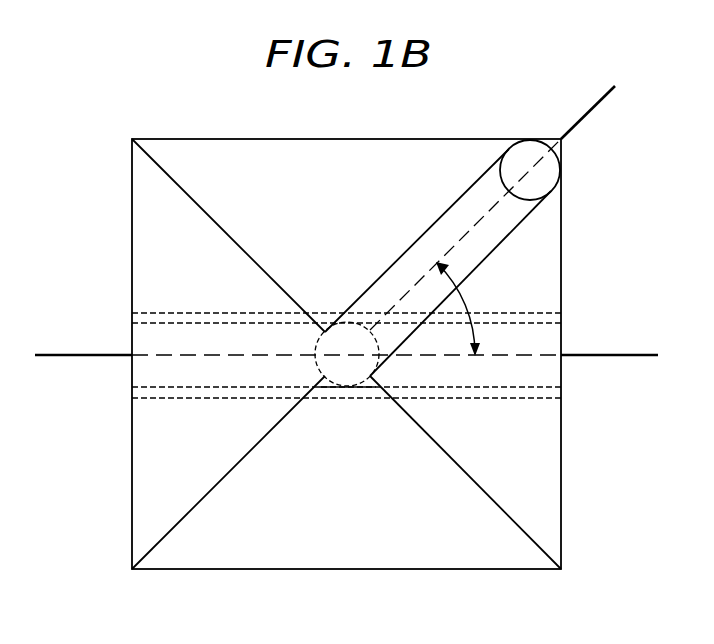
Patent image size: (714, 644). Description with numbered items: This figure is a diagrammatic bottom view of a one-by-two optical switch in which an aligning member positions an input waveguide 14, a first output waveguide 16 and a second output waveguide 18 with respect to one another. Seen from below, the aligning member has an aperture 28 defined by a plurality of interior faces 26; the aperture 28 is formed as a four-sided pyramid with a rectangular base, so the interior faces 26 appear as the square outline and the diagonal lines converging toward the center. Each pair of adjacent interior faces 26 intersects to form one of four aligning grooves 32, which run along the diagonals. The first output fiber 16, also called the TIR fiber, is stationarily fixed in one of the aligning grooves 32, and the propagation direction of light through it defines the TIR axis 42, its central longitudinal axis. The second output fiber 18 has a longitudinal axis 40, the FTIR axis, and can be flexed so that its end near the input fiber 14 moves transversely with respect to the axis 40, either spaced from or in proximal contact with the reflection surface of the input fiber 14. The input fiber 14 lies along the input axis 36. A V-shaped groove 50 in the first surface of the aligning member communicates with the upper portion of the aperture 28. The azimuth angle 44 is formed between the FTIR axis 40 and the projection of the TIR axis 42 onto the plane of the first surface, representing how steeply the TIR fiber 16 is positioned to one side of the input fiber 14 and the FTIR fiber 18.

The input waveguide 14 is at (133, 372).
The first output waveguide 16 is at (453, 211).
The second output waveguide 18 is at (557, 372).
The interior faces 26 is at (333, 139).
The aperture 28 is at (316, 235).
The aligning grooves 32 is at (210, 217).
The input axis 36 is at (82, 353).
The longitudinal axis 40 is at (610, 353).
The TIR axis 42 is at (595, 105).
The azimuth angle 44 is at (468, 298).
The V-shaped groove 50 is at (561, 313).